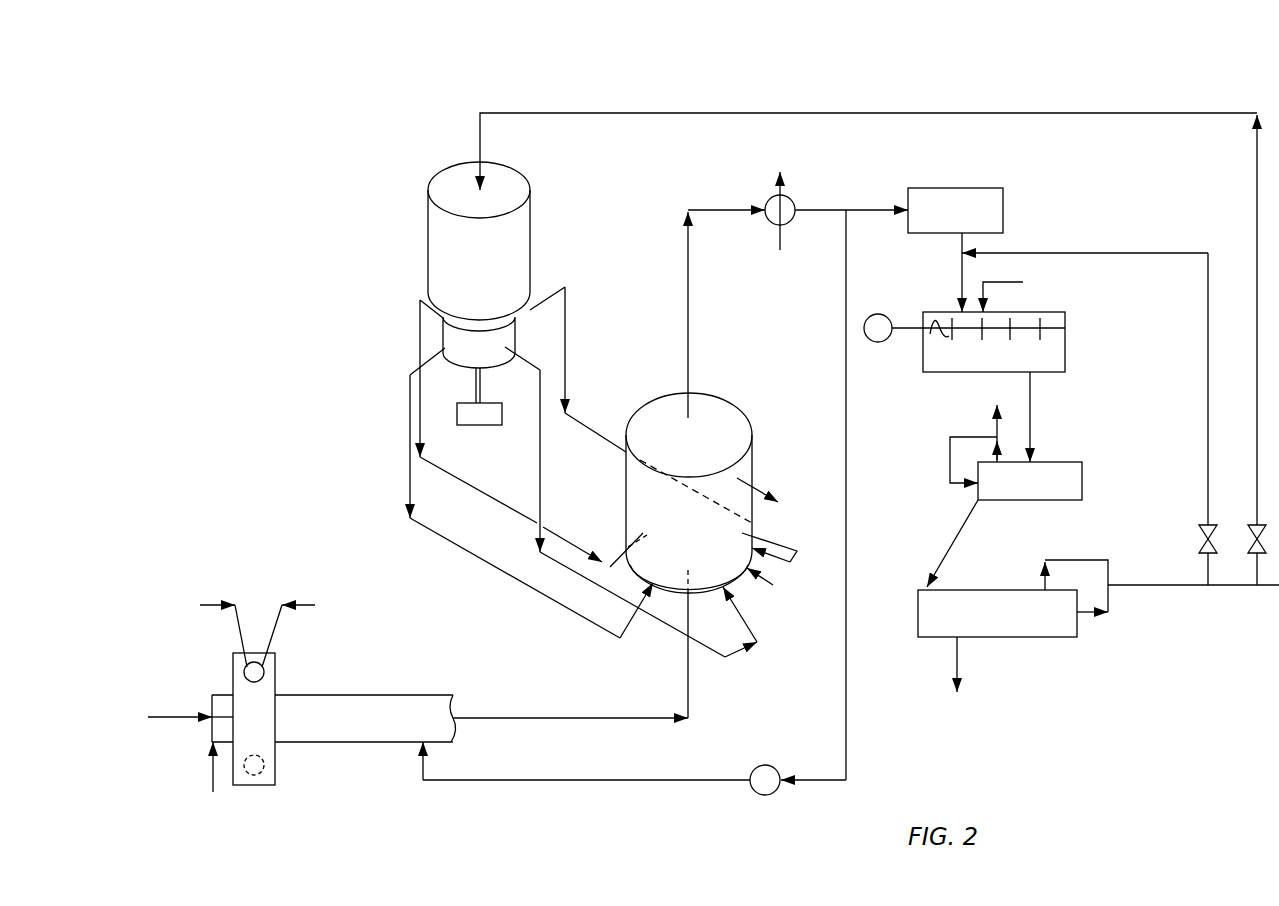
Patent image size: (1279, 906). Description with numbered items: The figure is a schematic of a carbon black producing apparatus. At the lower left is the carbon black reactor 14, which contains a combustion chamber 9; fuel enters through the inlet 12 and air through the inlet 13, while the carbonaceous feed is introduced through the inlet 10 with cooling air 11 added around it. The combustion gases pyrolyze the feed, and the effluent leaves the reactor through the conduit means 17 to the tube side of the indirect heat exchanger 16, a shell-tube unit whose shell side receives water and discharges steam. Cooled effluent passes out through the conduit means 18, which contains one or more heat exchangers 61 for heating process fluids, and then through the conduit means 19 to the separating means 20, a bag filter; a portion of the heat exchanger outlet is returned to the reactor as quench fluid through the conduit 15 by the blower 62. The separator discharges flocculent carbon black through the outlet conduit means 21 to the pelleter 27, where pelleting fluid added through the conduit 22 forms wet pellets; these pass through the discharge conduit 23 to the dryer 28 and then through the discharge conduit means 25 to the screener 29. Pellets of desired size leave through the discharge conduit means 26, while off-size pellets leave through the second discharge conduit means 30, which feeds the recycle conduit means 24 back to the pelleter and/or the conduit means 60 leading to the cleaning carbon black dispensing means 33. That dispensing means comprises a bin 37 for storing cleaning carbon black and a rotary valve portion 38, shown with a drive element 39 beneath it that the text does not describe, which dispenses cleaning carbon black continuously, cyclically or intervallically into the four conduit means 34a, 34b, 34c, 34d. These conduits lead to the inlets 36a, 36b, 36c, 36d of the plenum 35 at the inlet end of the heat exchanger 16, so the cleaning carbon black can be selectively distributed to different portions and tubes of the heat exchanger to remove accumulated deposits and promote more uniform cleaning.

The combustion chamber 9 is at (262, 731).
The carbonaceous feed inlet 10 is at (168, 717).
The cooling air 11 is at (213, 780).
The fuel inlet 12 is at (275, 632).
The air inlet 13 is at (240, 628).
The carbon black reactor 14 is at (340, 742).
The quench conduit 15 is at (846, 382).
The indirect heat exchanger 16 is at (752, 452).
The conduit means 17 is at (548, 716).
The conduit means 18 is at (703, 208).
The conduit means 19 is at (866, 208).
The separating means 20 is at (946, 231).
The outlet conduit means 21 is at (962, 275).
The pelleting fluid conduit 22 is at (1023, 282).
The discharge conduit 23 is at (1032, 398).
The recycle conduit means 24 is at (1208, 325).
The discharge conduit means 25 is at (950, 540).
The discharge conduit means 26 is at (957, 660).
The pelleter 27 is at (1065, 322).
The dryer 28 is at (1082, 482).
The screener 29 is at (918, 620).
The second discharge conduit means 30 is at (1145, 585).
The cleaning carbon black dispensing means 33 is at (377, 210).
The conduit means 34a is at (410, 375).
The conduit means 34b is at (535, 355).
The conduit means 34c is at (553, 287).
The conduit means 34d is at (420, 303).
The plenum 35 is at (705, 590).
The inlet 36a is at (653, 595).
The inlet 36b is at (740, 588).
The inlet 36c is at (786, 540).
The inlet 36d is at (630, 535).
The bin 37 is at (532, 218).
The rotary valve portion 38 is at (462, 362).
The feeder drive 39 is at (487, 425).
The conduit means 60 is at (1257, 195).
The heat exchangers 61 is at (770, 222).
The blower 62 is at (768, 766).